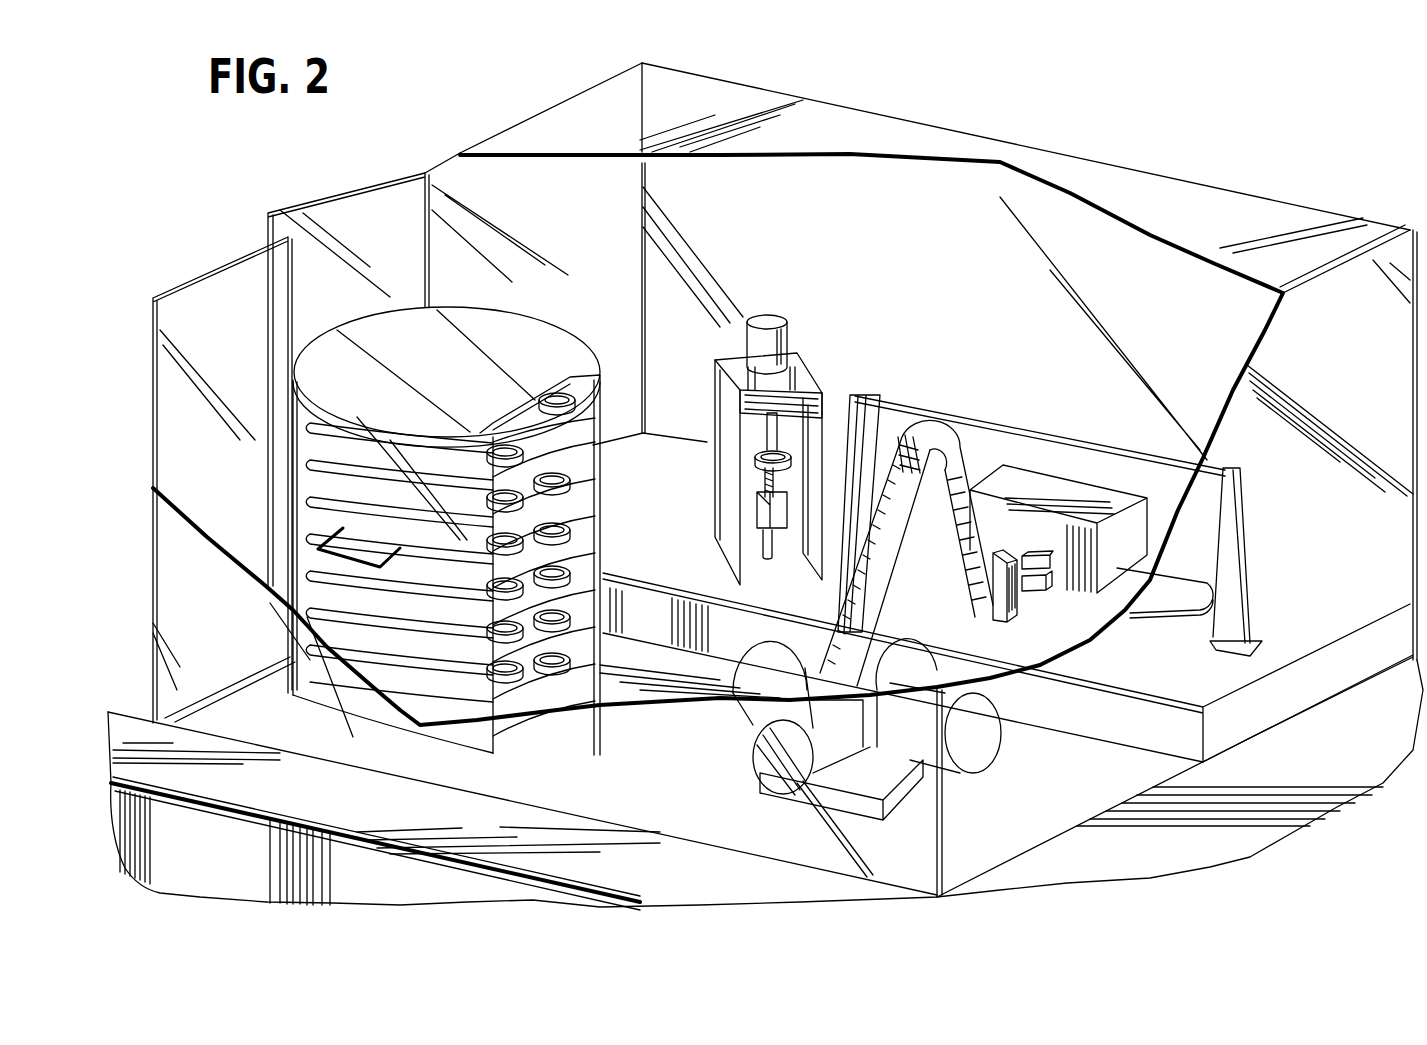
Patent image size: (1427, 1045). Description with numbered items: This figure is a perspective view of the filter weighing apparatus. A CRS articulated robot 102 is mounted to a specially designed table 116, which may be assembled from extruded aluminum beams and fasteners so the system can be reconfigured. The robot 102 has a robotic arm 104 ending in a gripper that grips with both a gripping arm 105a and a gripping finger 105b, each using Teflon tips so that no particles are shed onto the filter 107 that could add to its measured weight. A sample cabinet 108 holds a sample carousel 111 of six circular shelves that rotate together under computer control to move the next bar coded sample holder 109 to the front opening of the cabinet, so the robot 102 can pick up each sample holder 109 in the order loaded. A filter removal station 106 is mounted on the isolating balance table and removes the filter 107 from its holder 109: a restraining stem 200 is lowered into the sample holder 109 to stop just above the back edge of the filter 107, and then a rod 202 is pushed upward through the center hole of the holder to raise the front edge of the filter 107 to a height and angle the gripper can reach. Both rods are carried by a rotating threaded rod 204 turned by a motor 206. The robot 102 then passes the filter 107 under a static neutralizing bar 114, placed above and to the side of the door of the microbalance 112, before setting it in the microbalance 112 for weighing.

The articulated robot 102 is at (815, 636).
The robotic arm 104 is at (977, 568).
The gripping arm 105a is at (1035, 556).
The gripping finger 105b is at (1046, 592).
The filter removal station 106 is at (800, 360).
The filter 107 is at (1060, 572).
The sample cabinet 108 is at (567, 375).
The sample holder 109 is at (557, 393).
The sample carousel 111 is at (575, 473).
The microbalance 112 is at (1058, 488).
The static neutralizing bar 114 is at (1240, 555).
The table 116 is at (318, 799).
The restraining stem 200 is at (773, 437).
The rod 202 is at (760, 525).
The threaded rod 204 is at (766, 486).
The motor 206 is at (768, 325).